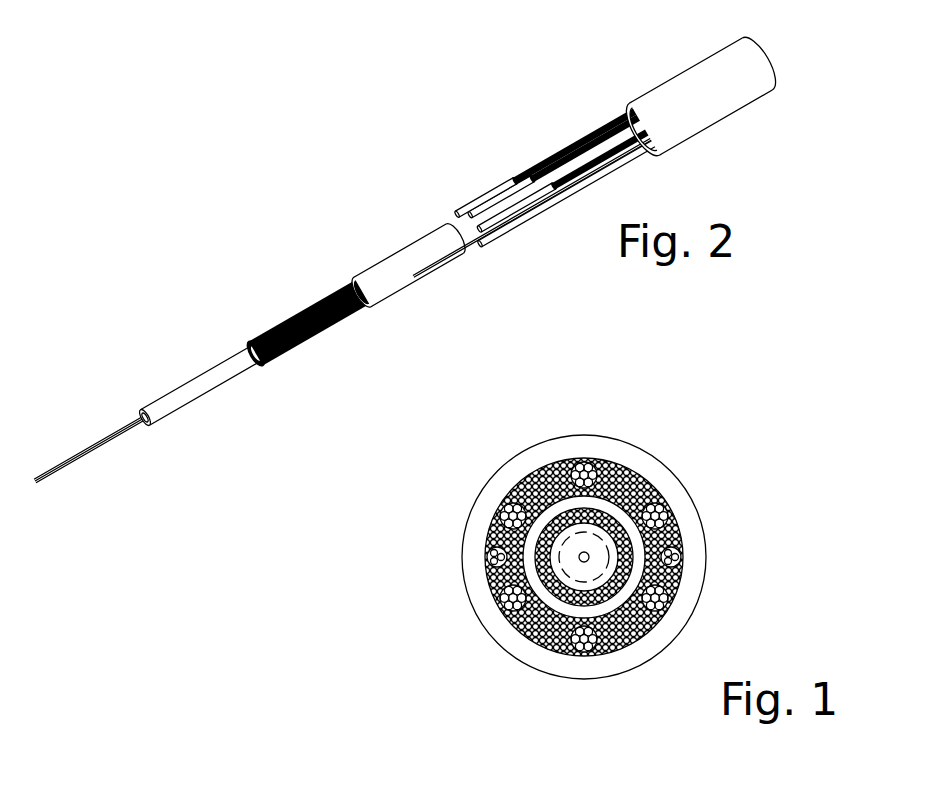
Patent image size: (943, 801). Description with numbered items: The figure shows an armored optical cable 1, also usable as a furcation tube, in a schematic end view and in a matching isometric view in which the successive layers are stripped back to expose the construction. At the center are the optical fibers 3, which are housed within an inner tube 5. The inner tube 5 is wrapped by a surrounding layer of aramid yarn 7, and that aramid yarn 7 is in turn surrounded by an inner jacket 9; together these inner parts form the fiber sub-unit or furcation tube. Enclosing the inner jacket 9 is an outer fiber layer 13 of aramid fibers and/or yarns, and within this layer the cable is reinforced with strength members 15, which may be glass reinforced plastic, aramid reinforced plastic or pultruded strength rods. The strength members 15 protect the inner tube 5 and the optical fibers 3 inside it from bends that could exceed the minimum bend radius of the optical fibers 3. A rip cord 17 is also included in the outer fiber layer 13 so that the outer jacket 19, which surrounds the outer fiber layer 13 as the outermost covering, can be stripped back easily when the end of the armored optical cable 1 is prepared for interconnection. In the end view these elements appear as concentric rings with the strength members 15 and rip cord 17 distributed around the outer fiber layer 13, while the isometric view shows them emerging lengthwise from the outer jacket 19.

In FIG. 2, the armored optical cable 1 is at (697, 120).
In FIG. 1, the armored optical cable 1 is at (698, 515).
In FIG. 2, the optical fibers 3 is at (76, 446).
In FIG. 1, the optical fibers 3 is at (577, 540).
In FIG. 2, the inner tube 5 is at (205, 382).
In FIG. 1, the inner tube 5 is at (573, 530).
In FIG. 2, the aramid yarn 7 is at (310, 307).
In FIG. 1, the aramid yarn 7 is at (610, 593).
In FIG. 2, the inner jacket 9 is at (412, 260).
In FIG. 1, the inner jacket 9 is at (555, 612).
In FIG. 2, the outer fiber layer 13 is at (580, 148).
In FIG. 1, the outer fiber layer 13 is at (628, 485).
In FIG. 2, the strength members 15 is at (498, 197).
In FIG. 1, the strength members 15 is at (587, 473).
In FIG. 2, the rip cord 17 is at (443, 262).
In FIG. 1, the rip cord 17 is at (670, 557).
In FIG. 2, the outer jacket 19 is at (690, 92).
In FIG. 1, the outer jacket 19 is at (477, 583).